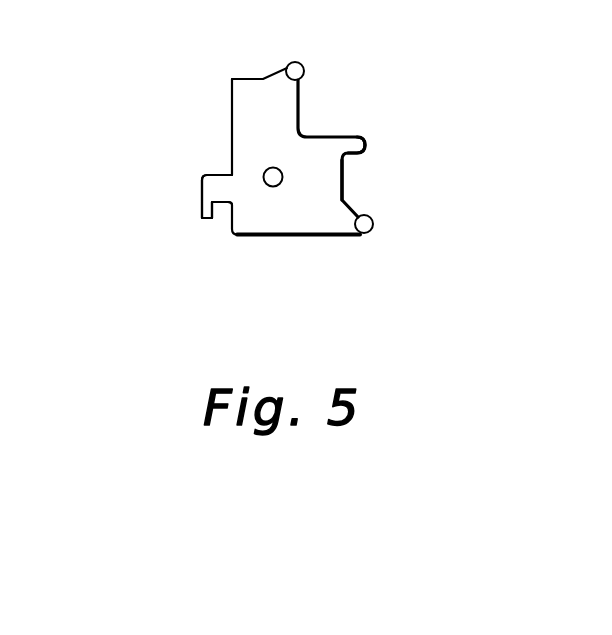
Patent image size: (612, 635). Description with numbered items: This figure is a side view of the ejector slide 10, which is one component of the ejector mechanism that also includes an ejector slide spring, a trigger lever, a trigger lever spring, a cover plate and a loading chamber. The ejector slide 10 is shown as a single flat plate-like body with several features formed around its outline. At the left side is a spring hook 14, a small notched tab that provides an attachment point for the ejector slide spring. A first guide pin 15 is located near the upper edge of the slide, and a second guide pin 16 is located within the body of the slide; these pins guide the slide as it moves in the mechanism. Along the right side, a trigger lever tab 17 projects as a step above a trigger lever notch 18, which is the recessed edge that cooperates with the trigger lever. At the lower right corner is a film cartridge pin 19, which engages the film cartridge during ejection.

The ejector slide 10 is at (138, 99).
The spring hook 14 is at (201, 199).
The first guide pin 15 is at (294, 62).
The second guide pin 16 is at (274, 187).
The trigger lever tab 17 is at (371, 143).
The trigger lever notch 18 is at (343, 183).
The film cartridge pin 19 is at (369, 234).